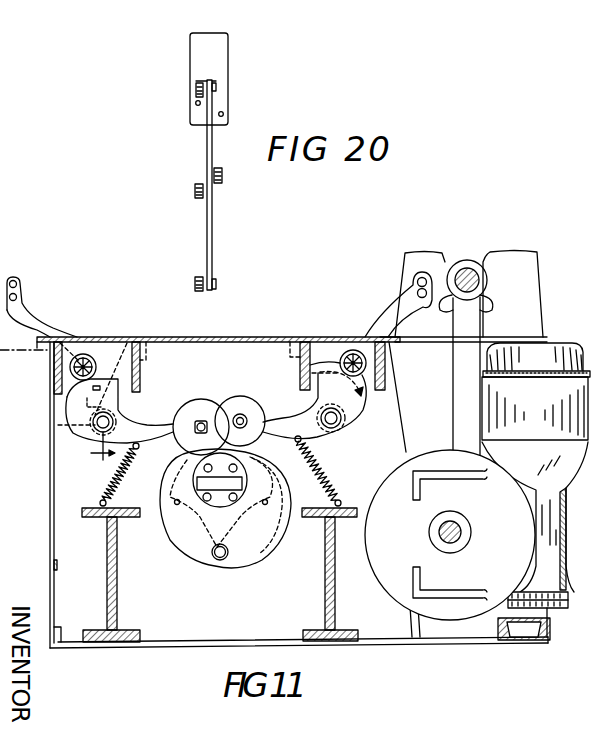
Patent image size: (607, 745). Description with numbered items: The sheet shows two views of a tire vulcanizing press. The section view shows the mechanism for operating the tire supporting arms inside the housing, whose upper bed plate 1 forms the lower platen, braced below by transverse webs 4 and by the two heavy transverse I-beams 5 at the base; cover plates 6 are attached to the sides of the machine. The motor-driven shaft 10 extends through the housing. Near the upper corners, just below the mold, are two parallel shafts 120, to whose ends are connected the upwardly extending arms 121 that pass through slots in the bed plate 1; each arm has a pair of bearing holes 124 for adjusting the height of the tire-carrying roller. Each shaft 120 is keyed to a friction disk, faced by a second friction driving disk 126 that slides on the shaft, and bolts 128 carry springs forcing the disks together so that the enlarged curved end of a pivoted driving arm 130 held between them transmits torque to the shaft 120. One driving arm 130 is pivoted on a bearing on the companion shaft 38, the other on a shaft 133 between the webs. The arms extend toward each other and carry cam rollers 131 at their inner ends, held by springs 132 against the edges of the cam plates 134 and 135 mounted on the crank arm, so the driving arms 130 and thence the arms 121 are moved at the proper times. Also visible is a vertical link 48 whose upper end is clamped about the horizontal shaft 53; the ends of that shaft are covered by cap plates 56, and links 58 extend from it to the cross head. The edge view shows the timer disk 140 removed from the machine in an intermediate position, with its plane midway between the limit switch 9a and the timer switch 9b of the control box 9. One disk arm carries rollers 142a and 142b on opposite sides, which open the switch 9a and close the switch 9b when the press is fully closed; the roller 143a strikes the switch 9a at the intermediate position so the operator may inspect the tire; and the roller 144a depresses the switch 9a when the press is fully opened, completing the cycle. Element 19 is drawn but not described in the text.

In FIG. 20, the control box 9 is at (228, 68).
In FIG. 20, the limit switch 9a is at (196, 103).
In FIG. 20, the timer switch 9b is at (223, 114).
In FIG. 20, the disk 140 is at (212, 238).
In FIG. 20, the roller 142a is at (195, 190).
In FIG. 20, the roller 142b is at (222, 176).
In FIG. 20, the roller 143a is at (198, 81).
In FIG. 20, the roller 144a is at (196, 285).
In FIG. 11, the bed plate 1 is at (265, 337).
In FIG. 11, the transverse webs 4 is at (141, 383).
In FIG. 11, the transverse I-beams 5 is at (118, 608).
In FIG. 11, the cover plates 6 is at (581, 410).
In FIG. 11, the shaft 10 is at (471, 532).
In FIG. 11, the rod 19 is at (103, 452).
In FIG. 11, the companion shaft 38 is at (97, 429).
In FIG. 11, the vertical link 48 is at (477, 327).
In FIG. 11, the horizontal shaft 53 is at (476, 262).
In FIG. 11, the cap plates 56 is at (600, 267).
In FIG. 11, the links 58 is at (600, 201).
In FIG. 11, the parallel shafts 120 is at (97, 353).
In FIG. 11, the upwardly extending arms 121 is at (35, 332).
In FIG. 11, the bearing holes 124 is at (416, 290).
In FIG. 11, the second friction driving disk 126 is at (141, 373).
In FIG. 11, the bolts 128 is at (105, 378).
In FIG. 11, the pivoted driving arm 130 is at (140, 430).
In FIG. 11, the cam rollers 131 is at (204, 403).
In FIG. 11, the springs 132 is at (110, 480).
In FIG. 11, the shaft 133 is at (333, 425).
In FIG. 11, the cam plate 134 is at (166, 540).
In FIG. 11, the cam plate 135 is at (278, 537).